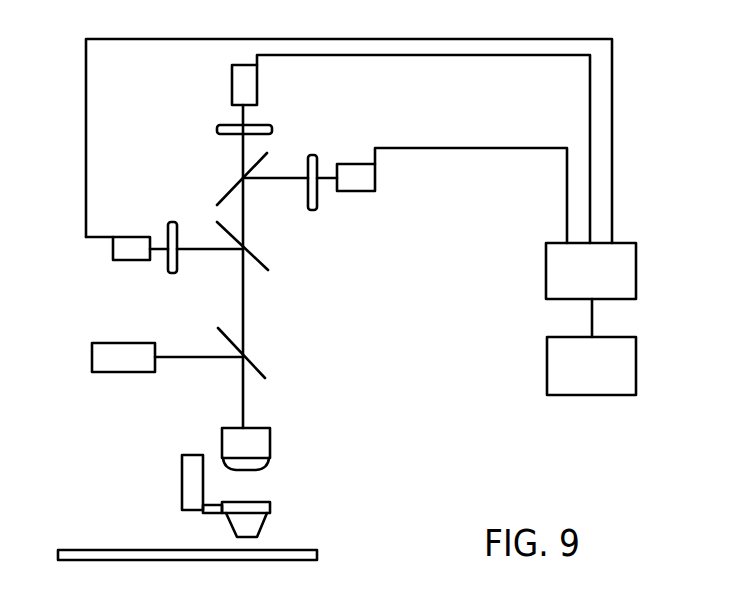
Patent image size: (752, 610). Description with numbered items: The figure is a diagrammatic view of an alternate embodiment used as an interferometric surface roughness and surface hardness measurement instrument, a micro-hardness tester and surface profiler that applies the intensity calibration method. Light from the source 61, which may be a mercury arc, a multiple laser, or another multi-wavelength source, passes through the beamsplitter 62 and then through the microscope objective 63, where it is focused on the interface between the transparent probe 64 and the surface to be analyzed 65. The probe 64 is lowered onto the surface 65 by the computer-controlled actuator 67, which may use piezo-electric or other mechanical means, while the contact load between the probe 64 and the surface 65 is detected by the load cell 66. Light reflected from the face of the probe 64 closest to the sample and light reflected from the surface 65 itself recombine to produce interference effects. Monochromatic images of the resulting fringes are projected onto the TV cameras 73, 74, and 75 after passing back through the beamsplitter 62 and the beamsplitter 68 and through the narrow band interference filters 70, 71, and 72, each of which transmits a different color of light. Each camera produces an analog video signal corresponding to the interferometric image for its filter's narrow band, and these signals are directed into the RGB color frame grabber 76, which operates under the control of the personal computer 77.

The source 61 is at (92, 353).
The beamsplitter 62 is at (265, 373).
The microscope objective 63 is at (270, 440).
The transparent probe 64 is at (270, 515).
The surface to be analyzed 65 is at (312, 548).
The load cell 66 is at (213, 511).
The computer-controlled actuator 67 is at (182, 458).
The beamsplitter 68 is at (268, 265).
The narrow band interference filter 70 is at (173, 222).
The narrow band interference filter 71 is at (217, 128).
The narrow band interference filter 72 is at (313, 153).
The TV camera 73 is at (132, 233).
The TV camera 74 is at (232, 82).
The TV camera 75 is at (375, 189).
The RGB color frame grabber 76 is at (607, 282).
The personal computer 77 is at (607, 381).